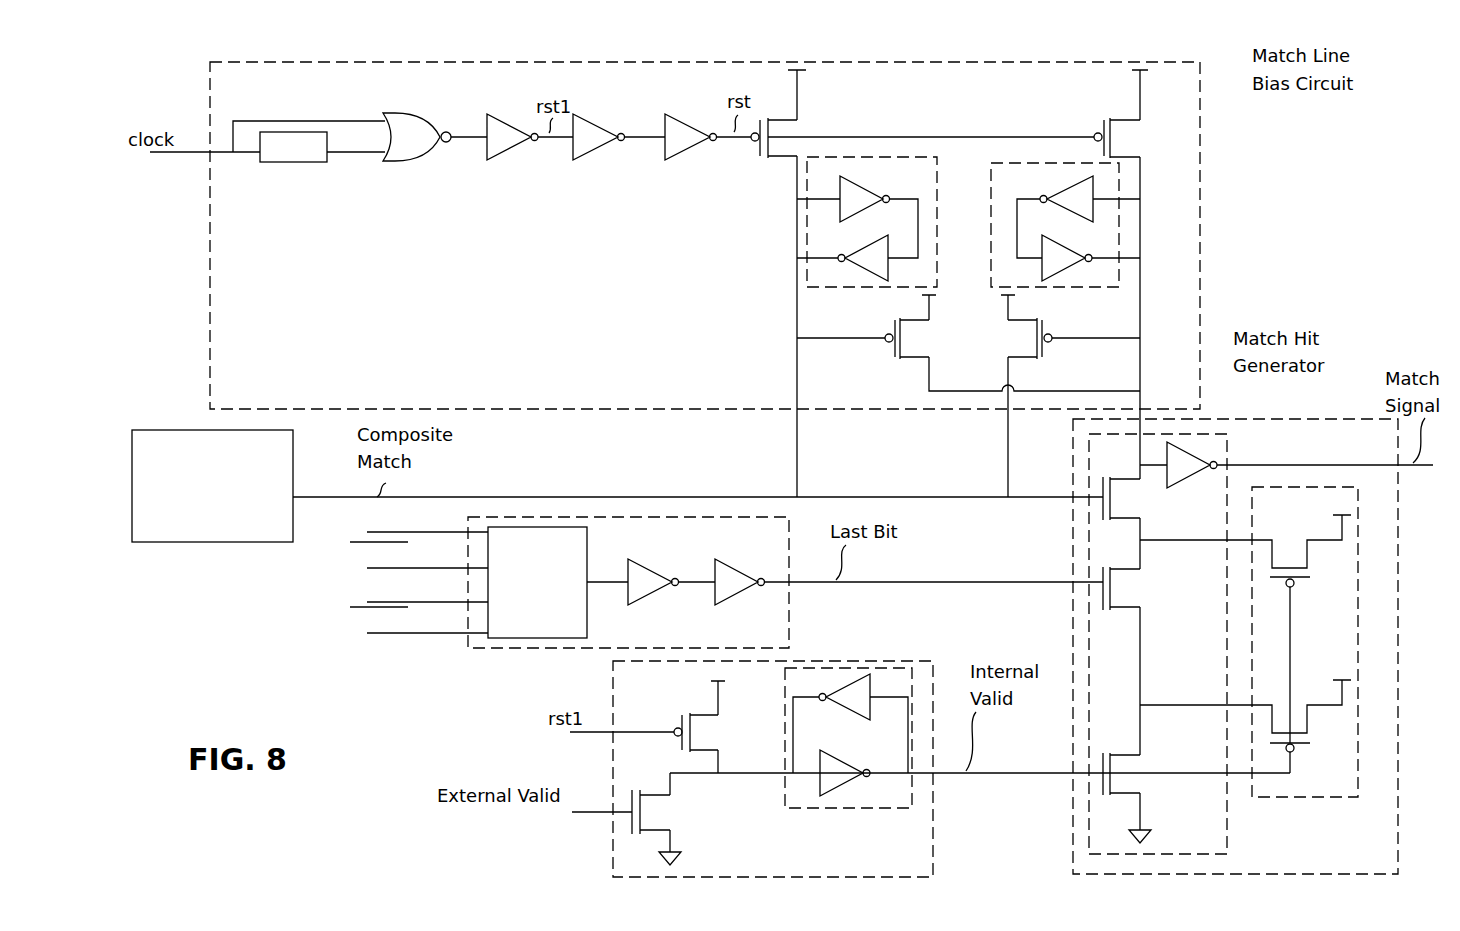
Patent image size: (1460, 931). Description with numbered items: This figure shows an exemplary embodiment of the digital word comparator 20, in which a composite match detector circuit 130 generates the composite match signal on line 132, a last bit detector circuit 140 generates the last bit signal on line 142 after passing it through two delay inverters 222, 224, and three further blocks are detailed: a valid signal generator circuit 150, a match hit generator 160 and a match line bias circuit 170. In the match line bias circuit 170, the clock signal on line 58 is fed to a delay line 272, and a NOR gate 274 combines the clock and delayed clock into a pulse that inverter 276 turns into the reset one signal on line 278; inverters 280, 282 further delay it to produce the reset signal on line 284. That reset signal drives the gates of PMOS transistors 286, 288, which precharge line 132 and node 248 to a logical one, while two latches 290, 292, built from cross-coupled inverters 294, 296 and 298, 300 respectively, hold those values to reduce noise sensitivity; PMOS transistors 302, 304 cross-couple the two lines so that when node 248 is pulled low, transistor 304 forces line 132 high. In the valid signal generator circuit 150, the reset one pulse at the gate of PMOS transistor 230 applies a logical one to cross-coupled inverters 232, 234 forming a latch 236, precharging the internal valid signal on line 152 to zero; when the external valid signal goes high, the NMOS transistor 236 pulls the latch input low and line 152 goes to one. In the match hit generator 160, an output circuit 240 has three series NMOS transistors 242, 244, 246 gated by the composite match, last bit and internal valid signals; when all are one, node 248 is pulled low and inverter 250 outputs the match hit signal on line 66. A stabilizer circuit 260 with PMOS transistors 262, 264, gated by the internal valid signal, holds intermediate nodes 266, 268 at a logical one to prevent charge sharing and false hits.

The digital word comparator 20 is at (258, 50).
The clock signal line 58 is at (203, 153).
The match hit signal line 66 is at (1306, 463).
The composite match detector circuit 130 is at (149, 428).
The composite match signal line 132 is at (521, 497).
The last bit detector circuit 140 is at (526, 650).
The last bit signal line 142 is at (936, 581).
The valid signal generator circuit 150 is at (613, 870).
The internal valid signal line 152 is at (1004, 772).
The match hit generator 160 is at (1240, 415).
The match line bias circuit 170 is at (1202, 112).
The inverter 222 is at (645, 574).
The inverter 224 is at (733, 574).
The PMOS transistor 230 is at (718, 725).
The inverter 232 is at (850, 710).
The inverter 234 is at (840, 770).
The latch 236 is at (678, 819).
The output circuit 240 is at (1226, 450).
The NMOS transistor 242 is at (1128, 494).
The NMOS transistor 244 is at (1138, 588).
The NMOS transistor 246 is at (1136, 771).
The output node line 248 is at (1140, 463).
The inverter 250 is at (1199, 480).
The stabilizer circuit 260 is at (1365, 534).
The PMOS transistor 262 is at (1287, 550).
The PMOS transistor 264 is at (1303, 706).
The node line 266 is at (1204, 549).
The node line 268 is at (1197, 688).
The delay line 272 is at (268, 163).
The NOR gate 274 is at (418, 117).
The inverter 276 is at (500, 118).
The reset one signal line 278 is at (549, 142).
The inverter 280 is at (596, 125).
The inverter 282 is at (680, 123).
The reset signal line 284 is at (736, 142).
The PMOS transistor 286 is at (801, 127).
The PMOS transistor 288 is at (1139, 128).
The latch 290 is at (940, 185).
The latch 292 is at (991, 218).
The inverter 294 is at (858, 190).
The inverter 296 is at (868, 250).
The inverter 298 is at (1072, 190).
The inverter 300 is at (1060, 252).
The PMOS transistor 302 is at (935, 341).
The PMOS transistor 304 is at (1003, 350).